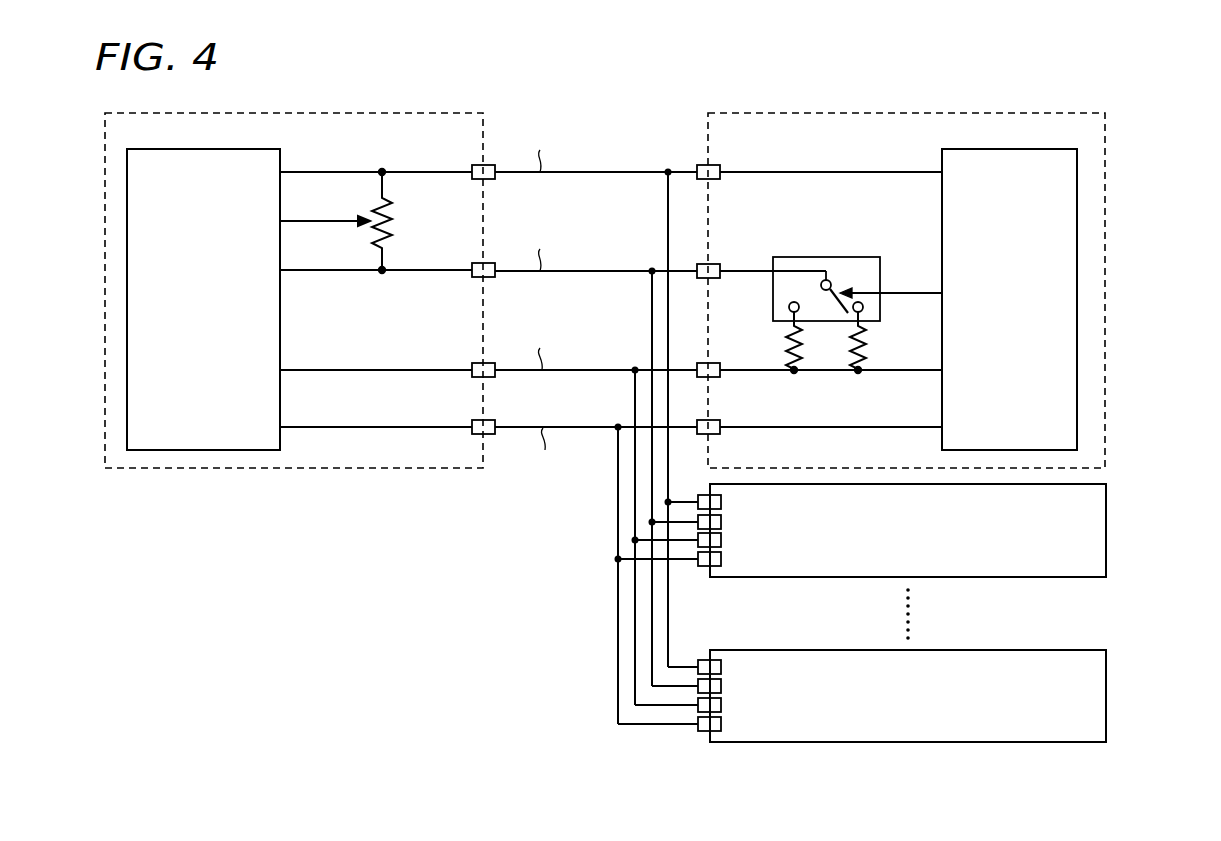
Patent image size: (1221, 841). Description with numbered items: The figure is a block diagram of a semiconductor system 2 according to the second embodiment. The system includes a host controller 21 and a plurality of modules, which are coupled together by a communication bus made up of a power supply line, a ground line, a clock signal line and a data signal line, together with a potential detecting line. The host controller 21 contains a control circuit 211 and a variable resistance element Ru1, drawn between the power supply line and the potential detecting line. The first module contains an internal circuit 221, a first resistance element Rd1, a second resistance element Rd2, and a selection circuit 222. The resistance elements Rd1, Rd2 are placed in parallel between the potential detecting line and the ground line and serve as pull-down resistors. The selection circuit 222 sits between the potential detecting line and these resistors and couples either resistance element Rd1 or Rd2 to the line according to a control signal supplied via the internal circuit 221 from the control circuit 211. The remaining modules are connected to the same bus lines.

The semiconductor system 2 is at (611, 85).
The host controller 21 is at (413, 113).
The control circuit 211 is at (197, 149).
The internal circuit 221 is at (970, 149).
The selection circuit 222 is at (830, 257).
The variable resistance element Ru1 is at (394, 229).
The first resistance element Rd1 is at (807, 347).
The second resistance element Rd2 is at (871, 347).